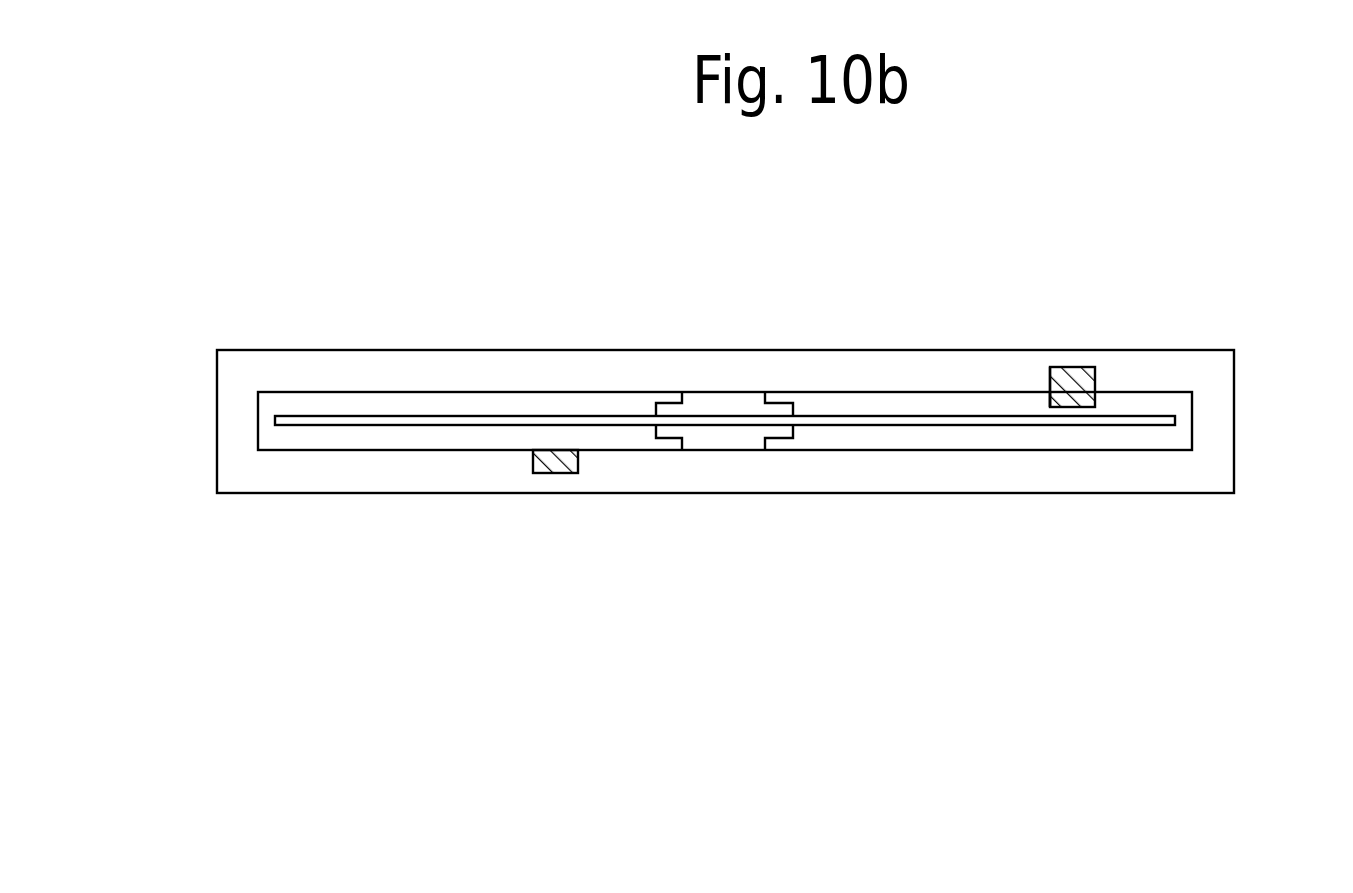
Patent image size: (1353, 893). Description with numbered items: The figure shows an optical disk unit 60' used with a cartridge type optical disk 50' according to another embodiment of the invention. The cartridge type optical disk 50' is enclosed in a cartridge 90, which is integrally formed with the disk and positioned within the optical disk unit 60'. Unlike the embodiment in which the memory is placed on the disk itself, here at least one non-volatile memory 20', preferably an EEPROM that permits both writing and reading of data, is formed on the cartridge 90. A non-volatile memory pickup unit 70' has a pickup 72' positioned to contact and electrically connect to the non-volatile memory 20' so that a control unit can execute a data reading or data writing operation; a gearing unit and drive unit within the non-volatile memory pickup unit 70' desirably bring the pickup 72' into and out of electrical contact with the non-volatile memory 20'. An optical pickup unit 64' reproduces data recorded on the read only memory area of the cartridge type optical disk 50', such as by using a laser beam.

The optical disk unit 60' is at (725, 364).
The cartridge 90 is at (248, 443).
The cartridge type optical disk 50' is at (802, 413).
The non-volatile memory pickup unit 70' is at (1092, 332).
The pickup 72' is at (1030, 349).
The non-volatile memory 20' is at (993, 349).
The optical pickup unit 64' is at (550, 509).